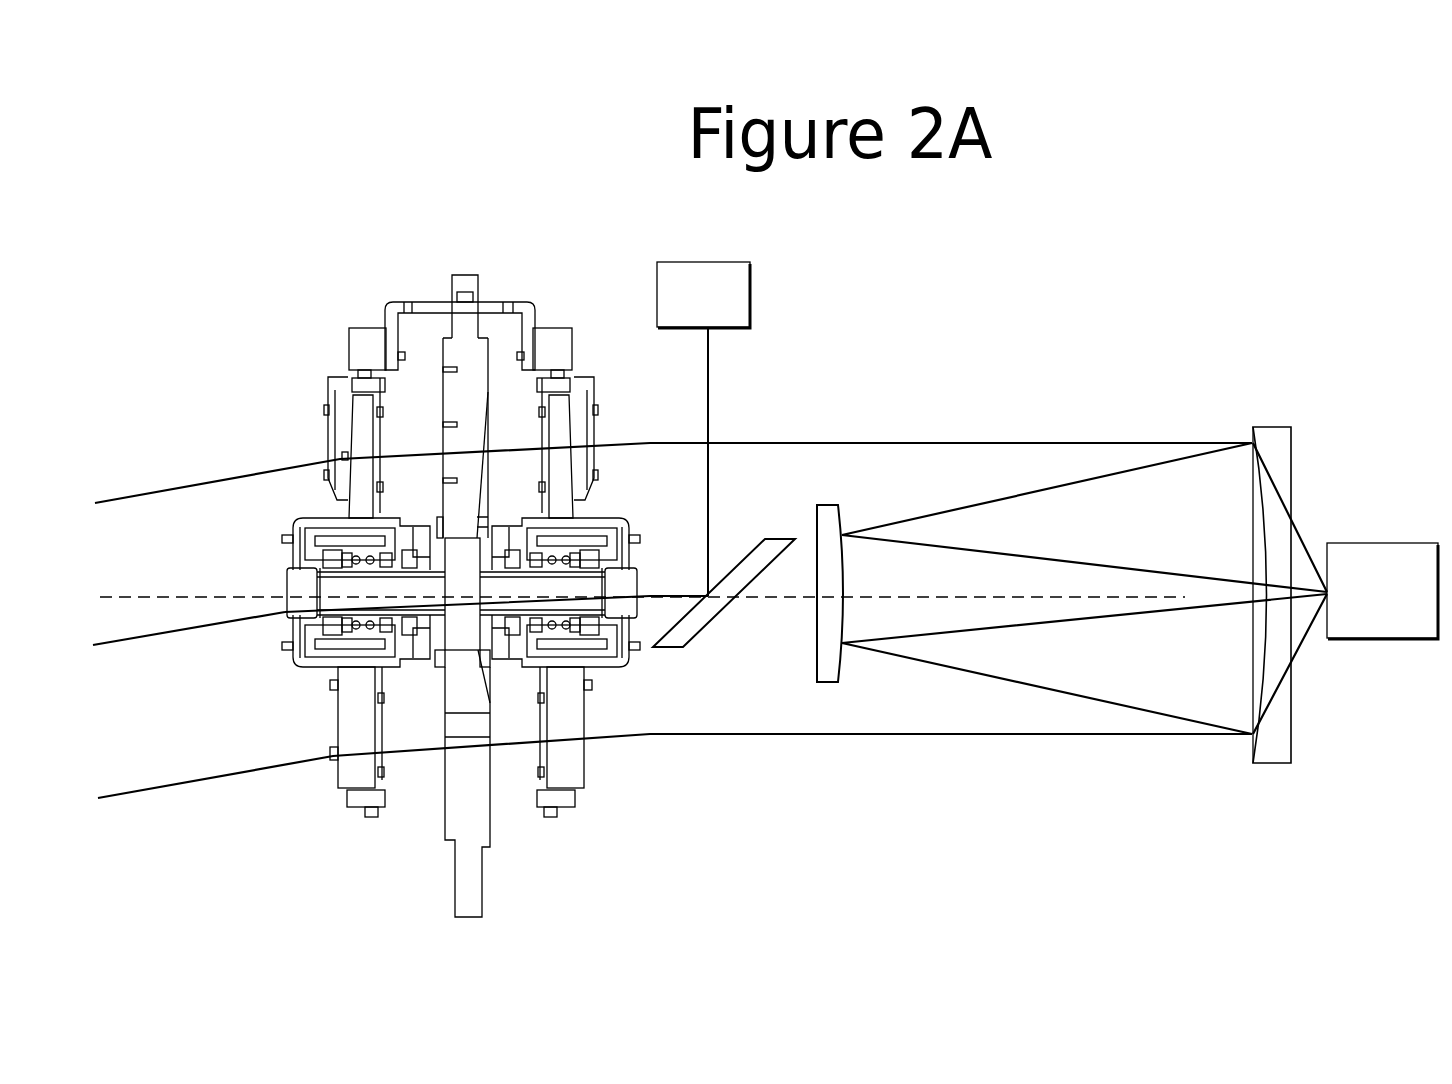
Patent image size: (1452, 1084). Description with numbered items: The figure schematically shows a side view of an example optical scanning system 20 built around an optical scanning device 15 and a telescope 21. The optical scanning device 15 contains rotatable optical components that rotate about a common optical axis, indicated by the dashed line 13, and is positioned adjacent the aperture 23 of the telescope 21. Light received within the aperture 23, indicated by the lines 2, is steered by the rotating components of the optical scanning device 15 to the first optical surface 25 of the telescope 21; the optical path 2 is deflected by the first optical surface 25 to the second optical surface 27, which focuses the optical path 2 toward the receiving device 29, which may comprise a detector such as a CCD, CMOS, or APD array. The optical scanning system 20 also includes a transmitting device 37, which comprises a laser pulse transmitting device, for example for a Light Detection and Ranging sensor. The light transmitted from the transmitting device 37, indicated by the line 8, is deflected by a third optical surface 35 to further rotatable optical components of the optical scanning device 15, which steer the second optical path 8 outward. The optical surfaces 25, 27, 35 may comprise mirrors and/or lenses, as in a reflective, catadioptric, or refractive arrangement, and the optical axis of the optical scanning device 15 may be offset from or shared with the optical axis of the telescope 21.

The optical path of light 2 is at (504, 438).
The second optical path of light 8 is at (712, 396).
The common optical axis 13 is at (185, 588).
The optical scanning device 15 is at (358, 290).
The optical scanning system 20 is at (1150, 290).
The telescope 21 is at (945, 800).
The aperture 23 is at (336, 455).
The first optical surface 25 is at (1282, 425).
The second optical surface 27 is at (827, 495).
The receiving device 29 is at (1385, 535).
The third optical surface 35 is at (710, 633).
The transmitting device 37 is at (672, 262).